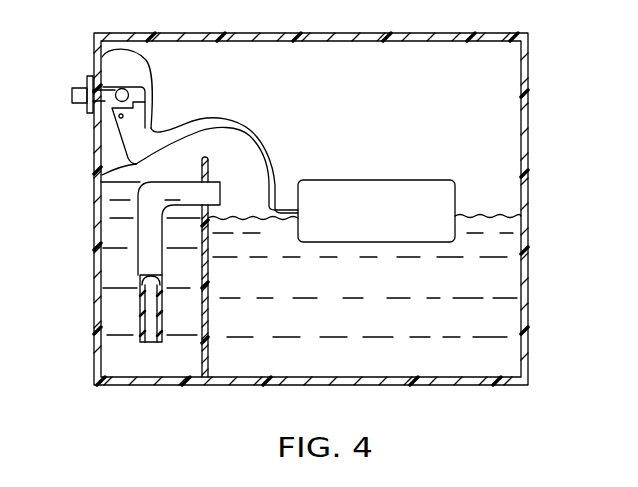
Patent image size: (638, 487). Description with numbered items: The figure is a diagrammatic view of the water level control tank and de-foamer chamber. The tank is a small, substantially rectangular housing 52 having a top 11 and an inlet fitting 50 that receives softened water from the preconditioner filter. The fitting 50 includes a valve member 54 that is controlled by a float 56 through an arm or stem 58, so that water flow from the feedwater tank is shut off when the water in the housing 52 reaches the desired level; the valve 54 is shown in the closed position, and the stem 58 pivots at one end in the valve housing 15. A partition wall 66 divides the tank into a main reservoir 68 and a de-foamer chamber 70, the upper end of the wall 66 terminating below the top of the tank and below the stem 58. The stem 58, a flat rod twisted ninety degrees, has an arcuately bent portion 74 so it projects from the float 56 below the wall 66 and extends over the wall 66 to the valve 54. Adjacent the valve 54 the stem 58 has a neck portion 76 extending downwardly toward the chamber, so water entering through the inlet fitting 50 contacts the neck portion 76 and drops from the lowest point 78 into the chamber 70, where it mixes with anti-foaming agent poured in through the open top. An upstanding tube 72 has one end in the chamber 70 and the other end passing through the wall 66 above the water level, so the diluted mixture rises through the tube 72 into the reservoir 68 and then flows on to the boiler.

The tank 11 is at (402, 33).
The housing dome 15 is at (110, 60).
The inlet fitting 50 is at (78, 85).
The housing 52 is at (535, 97).
The valve member 54 is at (132, 78).
The float 56 is at (378, 186).
The arm or stem 58 is at (267, 132).
The partition wall 66 is at (210, 293).
The main reservoir 68 is at (472, 245).
The de-foamer chamber 70 is at (110, 237).
The upstanding tube 72 is at (102, 272).
The arcuately bent portion 74 is at (227, 122).
The neck portion 76 is at (110, 143).
The lowest point 78 is at (133, 168).